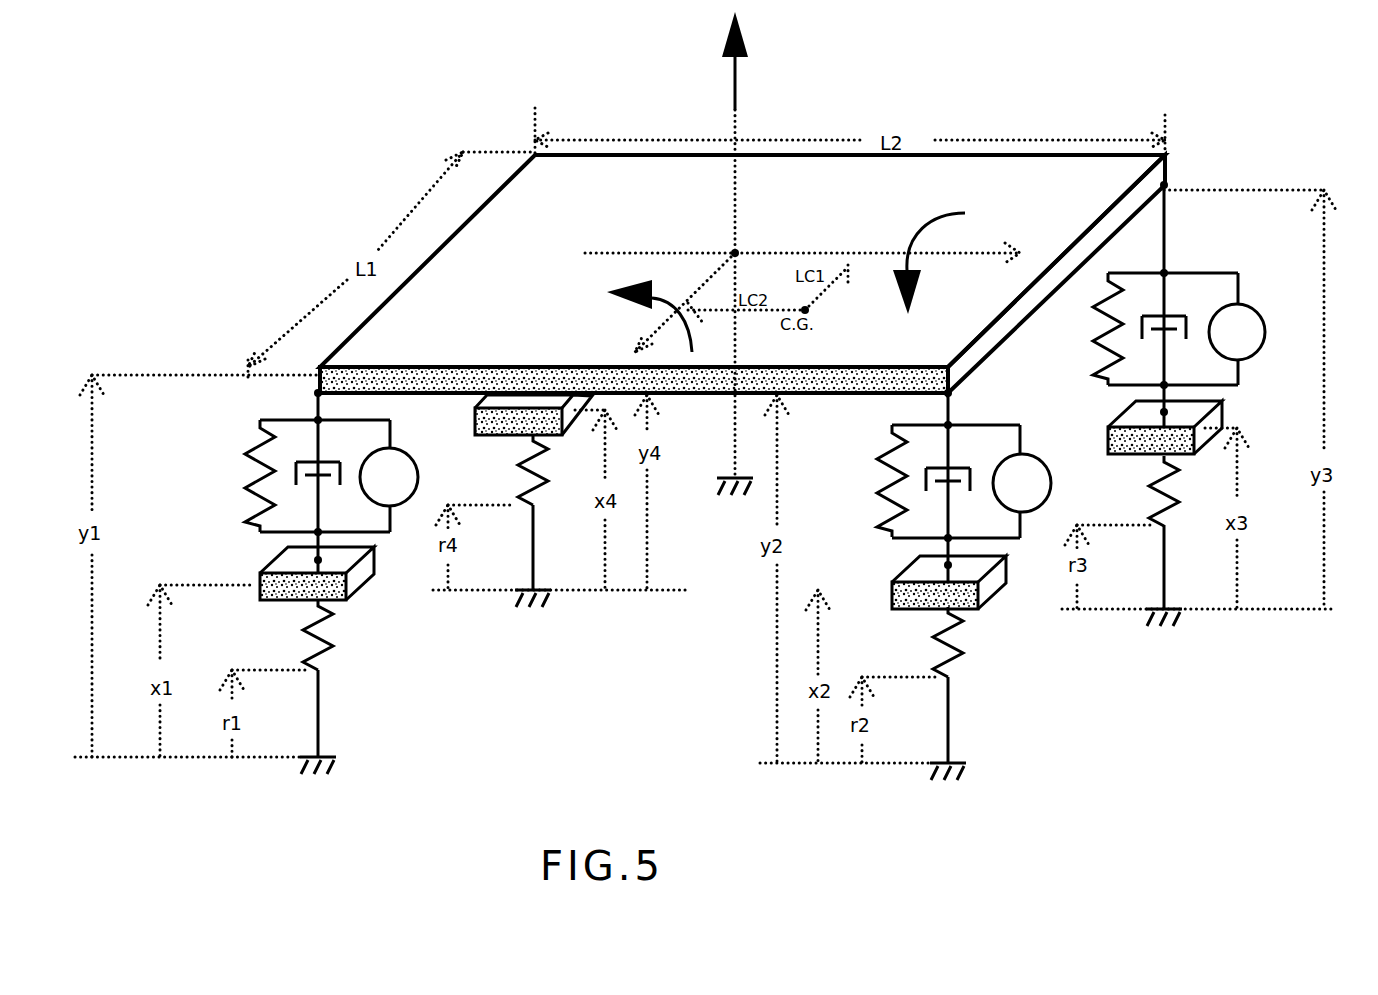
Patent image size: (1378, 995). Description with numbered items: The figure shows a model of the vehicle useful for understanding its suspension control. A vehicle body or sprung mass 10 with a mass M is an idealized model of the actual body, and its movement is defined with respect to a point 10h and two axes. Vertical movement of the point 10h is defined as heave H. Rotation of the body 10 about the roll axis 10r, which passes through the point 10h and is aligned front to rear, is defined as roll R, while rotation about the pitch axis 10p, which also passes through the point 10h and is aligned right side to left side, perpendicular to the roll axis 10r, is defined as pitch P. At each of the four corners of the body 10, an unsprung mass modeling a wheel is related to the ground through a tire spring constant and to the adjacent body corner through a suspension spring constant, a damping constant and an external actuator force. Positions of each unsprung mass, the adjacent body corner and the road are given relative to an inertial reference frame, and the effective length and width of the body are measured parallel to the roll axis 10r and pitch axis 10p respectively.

The vehicle body or sprung mass 10 is at (1063, 180).
The point 10h is at (736, 252).
The pitch axis 10p is at (686, 303).
The roll axis 10r is at (862, 255).